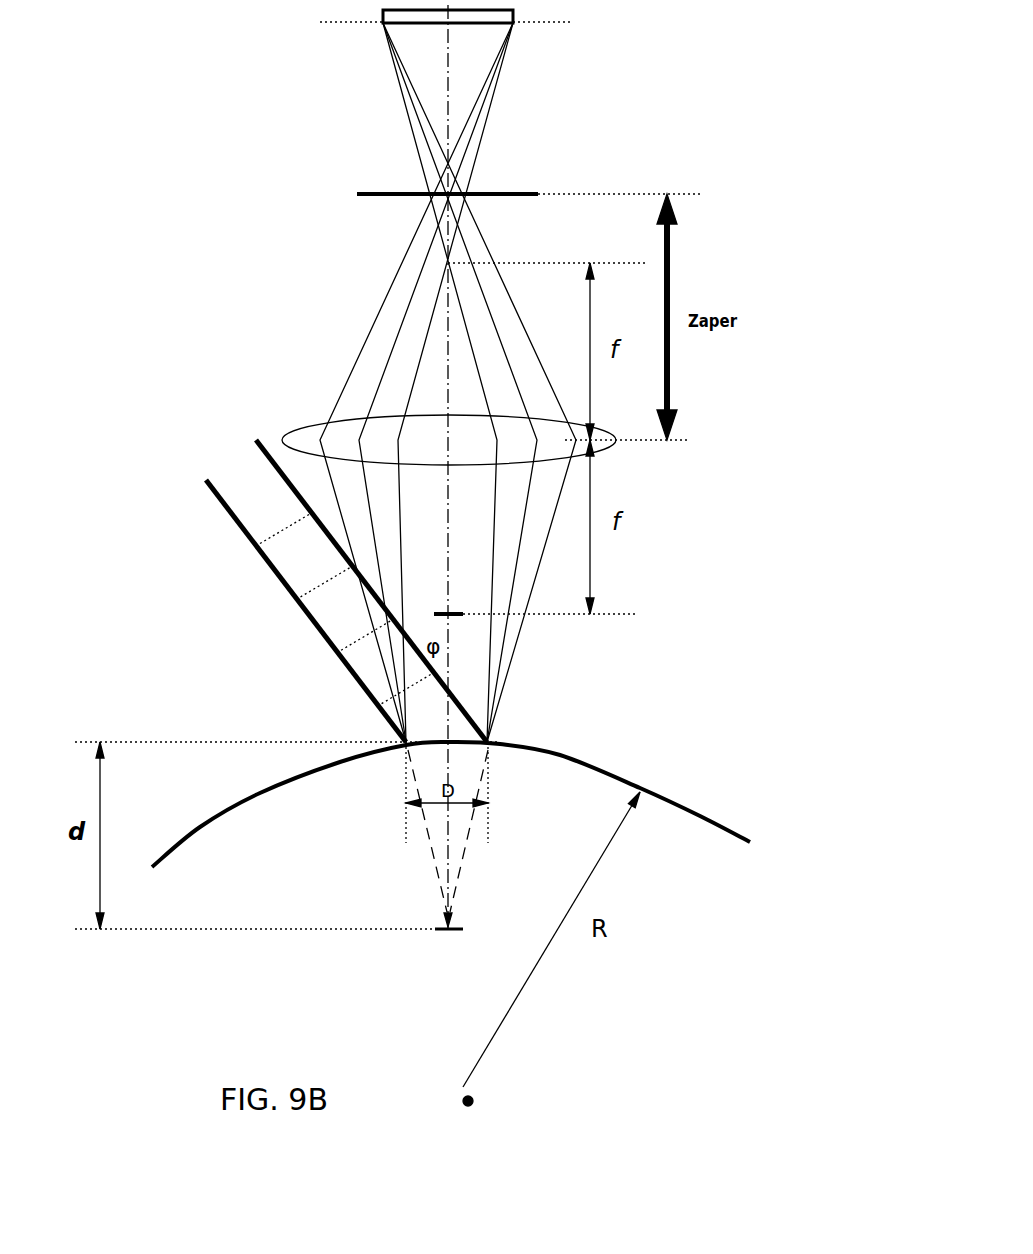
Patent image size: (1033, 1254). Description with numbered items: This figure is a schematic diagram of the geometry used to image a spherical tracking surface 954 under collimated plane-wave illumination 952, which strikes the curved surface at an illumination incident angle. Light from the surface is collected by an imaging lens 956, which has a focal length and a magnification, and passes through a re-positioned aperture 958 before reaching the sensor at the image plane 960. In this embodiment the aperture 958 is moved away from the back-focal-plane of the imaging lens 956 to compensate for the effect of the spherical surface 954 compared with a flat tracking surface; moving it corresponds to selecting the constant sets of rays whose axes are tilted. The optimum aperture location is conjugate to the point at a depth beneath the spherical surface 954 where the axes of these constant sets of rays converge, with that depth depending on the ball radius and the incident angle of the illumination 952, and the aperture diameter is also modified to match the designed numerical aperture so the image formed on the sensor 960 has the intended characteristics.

The collimated plane-wave illumination 952 is at (291, 574).
The spherical tracking surface 954 is at (499, 796).
The imaging lens 956 is at (449, 440).
The re-positioned aperture 958 is at (461, 211).
The sensor at image plane 960 is at (547, 40).